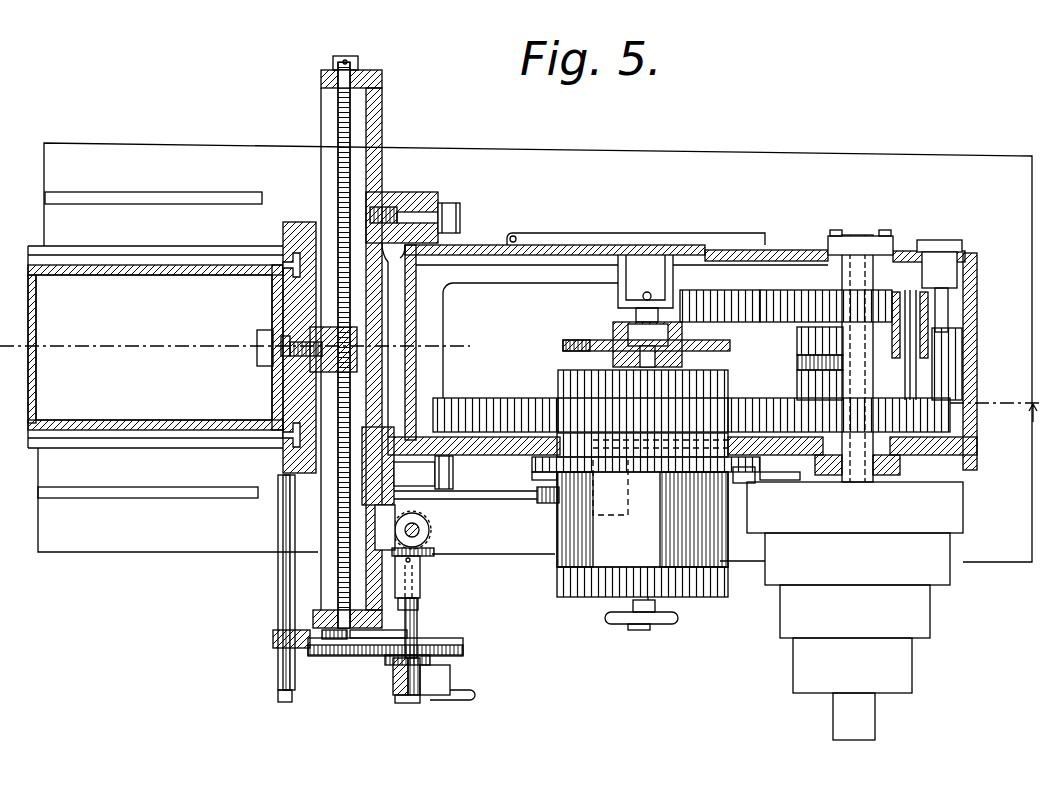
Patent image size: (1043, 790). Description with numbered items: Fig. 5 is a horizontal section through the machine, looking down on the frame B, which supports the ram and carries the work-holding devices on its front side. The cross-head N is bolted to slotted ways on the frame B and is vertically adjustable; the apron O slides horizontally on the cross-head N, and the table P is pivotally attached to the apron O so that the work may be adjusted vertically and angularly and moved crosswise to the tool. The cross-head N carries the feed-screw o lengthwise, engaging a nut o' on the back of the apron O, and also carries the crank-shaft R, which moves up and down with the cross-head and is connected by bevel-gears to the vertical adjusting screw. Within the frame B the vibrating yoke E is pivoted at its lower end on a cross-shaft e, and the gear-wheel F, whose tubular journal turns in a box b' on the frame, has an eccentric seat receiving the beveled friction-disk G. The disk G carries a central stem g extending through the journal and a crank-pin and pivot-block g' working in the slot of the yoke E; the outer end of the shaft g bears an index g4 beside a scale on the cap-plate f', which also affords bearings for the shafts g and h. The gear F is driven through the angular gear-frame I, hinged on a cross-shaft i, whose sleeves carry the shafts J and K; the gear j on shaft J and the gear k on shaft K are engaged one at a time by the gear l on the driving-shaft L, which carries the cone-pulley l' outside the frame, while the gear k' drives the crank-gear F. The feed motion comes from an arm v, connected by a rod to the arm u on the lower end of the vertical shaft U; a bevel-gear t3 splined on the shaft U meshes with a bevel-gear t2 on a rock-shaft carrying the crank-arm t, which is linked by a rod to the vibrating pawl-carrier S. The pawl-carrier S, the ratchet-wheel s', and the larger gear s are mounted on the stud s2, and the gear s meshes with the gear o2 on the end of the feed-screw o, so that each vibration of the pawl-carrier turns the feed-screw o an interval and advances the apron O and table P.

The table P is at (175, 347).
The apron O is at (302, 218).
The nut o' is at (336, 333).
The cross-head N is at (380, 120).
The feed-screw o is at (323, 345).
The frame B is at (421, 349).
The cross-shaft e is at (618, 303).
The pivot-block g' is at (647, 344).
The vibrating yoke E is at (555, 348).
The gear-wheel F is at (516, 397).
The friction-disk G is at (728, 380).
The gear j is at (704, 290).
The shaft J is at (778, 290).
The gear l is at (857, 356).
The angular gear-frame I is at (820, 348).
The driving-shaft L is at (850, 383).
The shaft K is at (910, 294).
The cross-shaft i is at (950, 296).
The gear k is at (966, 352).
The gear k' is at (864, 417).
The arm v is at (537, 494).
The box b' is at (666, 500).
The cap-plate f' is at (642, 582).
The index g4 is at (648, 600).
The shaft g is at (636, 628).
The shaft h is at (675, 622).
The cone-pulley l' is at (848, 603).
The crank-shaft R is at (272, 586).
The vertical shaft U is at (432, 527).
The arm u is at (403, 530).
The bevel-gear t3 is at (434, 538).
The bevel-gear t2 is at (432, 553).
The crank-arm t is at (465, 640).
The gear s is at (399, 648).
The gear o2 is at (323, 650).
The ratchet-wheel s' is at (391, 665).
The pawl-carrier S is at (393, 680).
The stud s2 is at (408, 703).